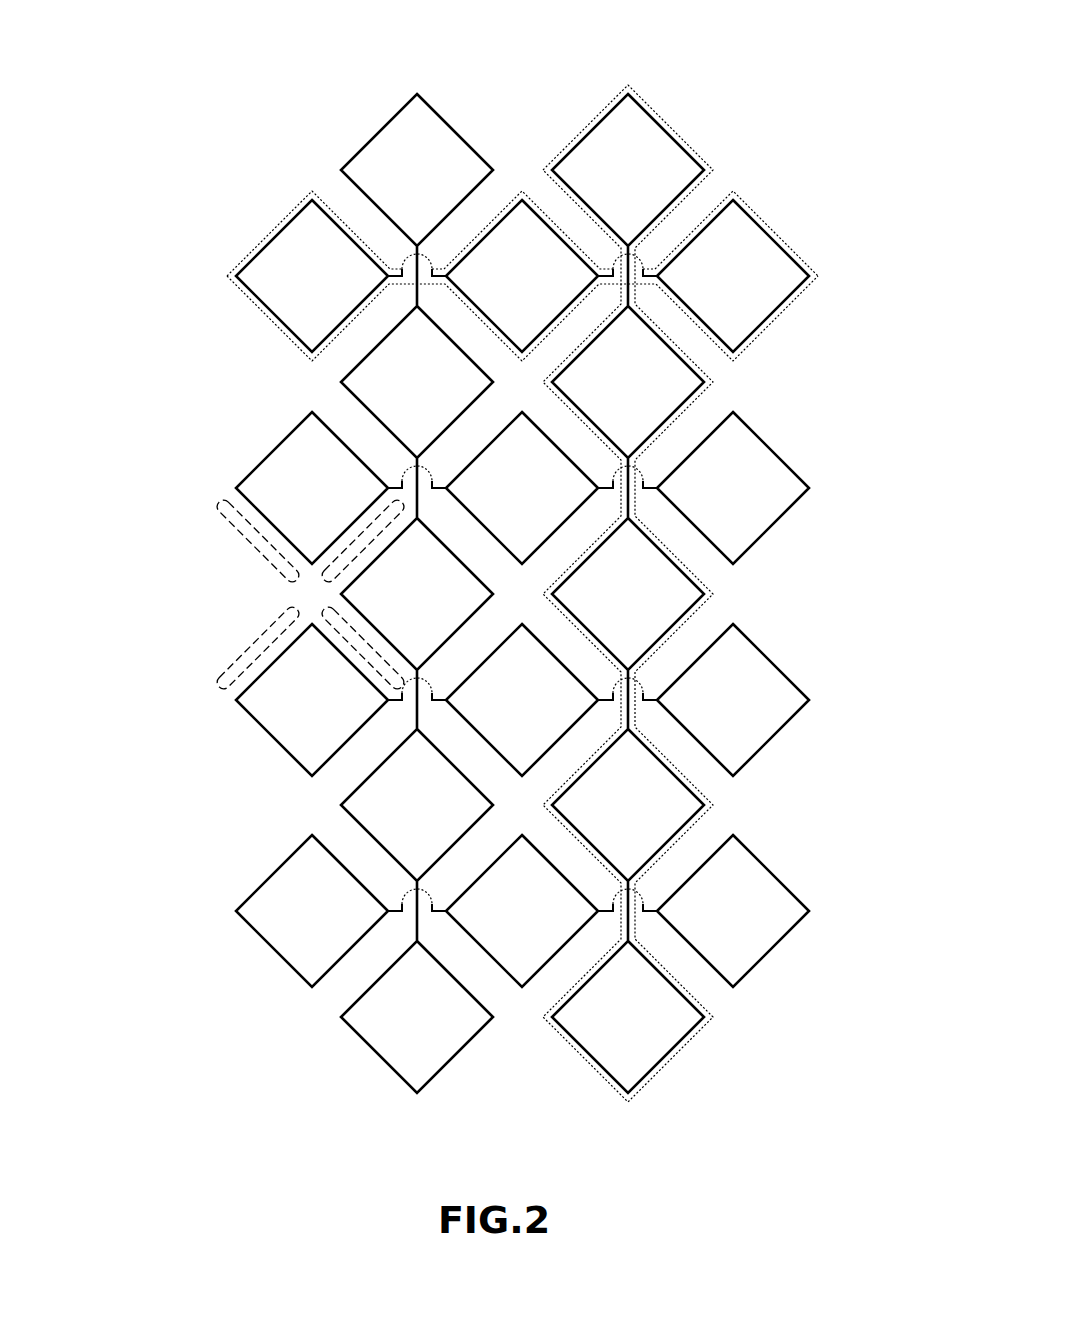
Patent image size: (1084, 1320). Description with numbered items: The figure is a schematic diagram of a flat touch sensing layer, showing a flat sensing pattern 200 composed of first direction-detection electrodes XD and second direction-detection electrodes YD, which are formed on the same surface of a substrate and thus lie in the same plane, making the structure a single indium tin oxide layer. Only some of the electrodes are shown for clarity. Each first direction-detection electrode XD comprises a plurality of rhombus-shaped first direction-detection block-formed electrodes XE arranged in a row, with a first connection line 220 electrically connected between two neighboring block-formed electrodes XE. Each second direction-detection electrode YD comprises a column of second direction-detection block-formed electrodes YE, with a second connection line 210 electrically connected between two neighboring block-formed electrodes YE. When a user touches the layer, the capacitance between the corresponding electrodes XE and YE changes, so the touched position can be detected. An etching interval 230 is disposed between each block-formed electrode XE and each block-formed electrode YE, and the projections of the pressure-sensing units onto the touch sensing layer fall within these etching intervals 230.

The flat sensing pattern 200 is at (197, 88).
The second connection line 210 is at (412, 290).
The first connection line 220 is at (396, 264).
The etching interval 230 is at (255, 646).
The first direction-detection block-formed electrode XE is at (522, 593).
The second direction-detection block-formed electrode YE is at (522, 593).
The first direction-detection electrode XD is at (784, 231).
The second direction-detection electrode YD is at (674, 126).